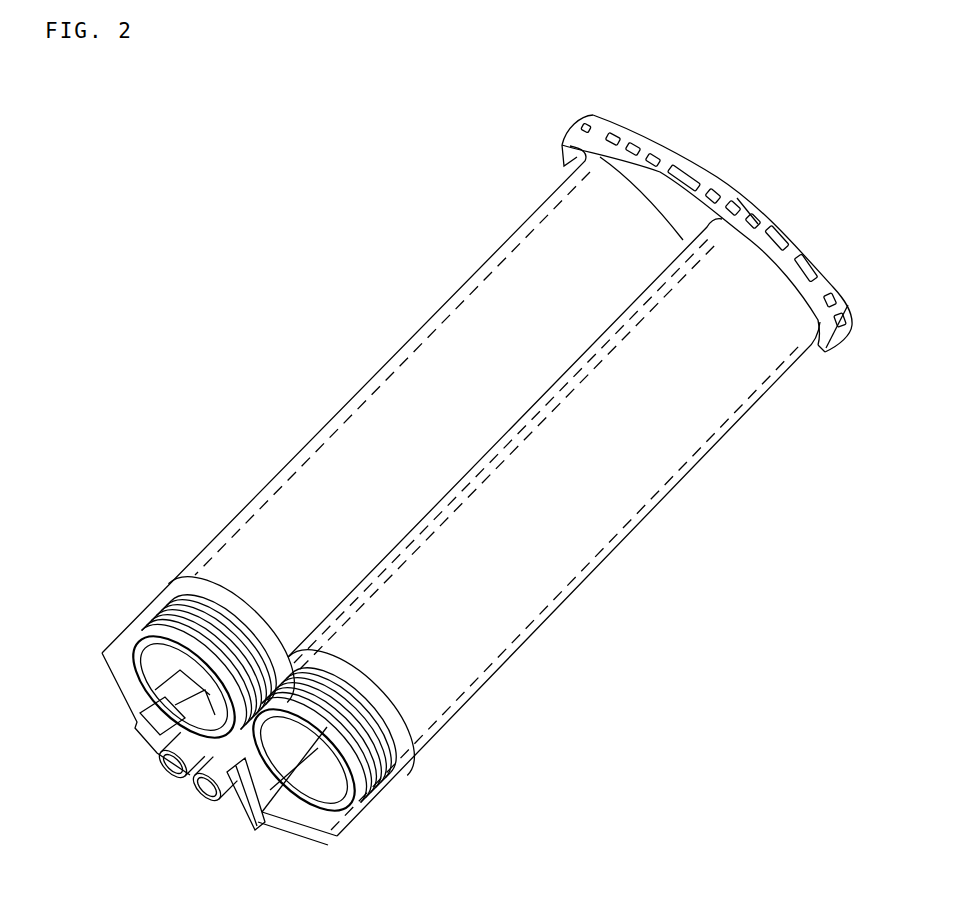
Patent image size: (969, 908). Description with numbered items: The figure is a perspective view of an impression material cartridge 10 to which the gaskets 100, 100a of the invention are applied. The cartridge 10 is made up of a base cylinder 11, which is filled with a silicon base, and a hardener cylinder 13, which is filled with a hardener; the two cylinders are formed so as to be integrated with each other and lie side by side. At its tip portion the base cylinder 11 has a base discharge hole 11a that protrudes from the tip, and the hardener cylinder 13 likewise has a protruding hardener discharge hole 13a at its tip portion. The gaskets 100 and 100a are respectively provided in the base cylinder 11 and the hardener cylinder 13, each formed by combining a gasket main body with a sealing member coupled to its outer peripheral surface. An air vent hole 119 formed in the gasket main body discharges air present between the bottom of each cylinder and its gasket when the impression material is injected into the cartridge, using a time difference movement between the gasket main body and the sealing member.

The impression material cartridge 10 is at (316, 264).
The base cylinder 11 is at (533, 540).
The hardener cylinder 13 is at (380, 432).
The base discharge hole 11a is at (213, 806).
The hardener discharge hole 13a is at (182, 779).
The gasket 100 is at (352, 767).
The gasket 100a is at (162, 598).
The air vent hole 119 is at (373, 757).